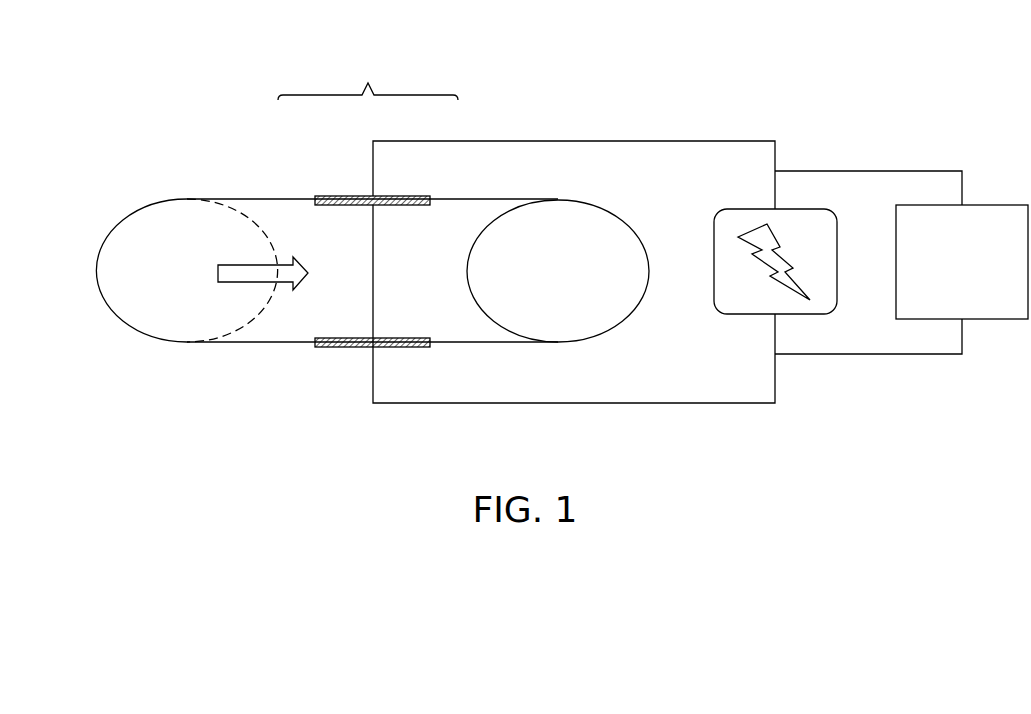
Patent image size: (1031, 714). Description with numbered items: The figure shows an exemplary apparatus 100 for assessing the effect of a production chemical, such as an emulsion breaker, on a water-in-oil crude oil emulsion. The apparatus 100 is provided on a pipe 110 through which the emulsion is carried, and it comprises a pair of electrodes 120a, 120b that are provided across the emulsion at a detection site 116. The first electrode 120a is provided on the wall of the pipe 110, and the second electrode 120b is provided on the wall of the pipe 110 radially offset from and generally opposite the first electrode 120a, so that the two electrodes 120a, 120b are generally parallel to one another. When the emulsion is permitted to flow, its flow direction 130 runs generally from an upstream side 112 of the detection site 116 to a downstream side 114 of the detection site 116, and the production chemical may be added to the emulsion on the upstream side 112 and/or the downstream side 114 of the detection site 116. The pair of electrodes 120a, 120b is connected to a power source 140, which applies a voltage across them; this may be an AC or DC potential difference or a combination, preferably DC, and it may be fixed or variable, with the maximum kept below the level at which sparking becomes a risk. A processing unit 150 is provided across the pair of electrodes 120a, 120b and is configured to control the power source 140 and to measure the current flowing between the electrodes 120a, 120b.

The apparatus 100 is at (802, 88).
The pipe 110 is at (248, 198).
The upstream side 112 is at (114, 270).
The downstream side 114 is at (583, 271).
The detection site 116 is at (368, 76).
The first electrode 120a is at (325, 350).
The second electrode 120b is at (338, 193).
The flow direction 130 is at (225, 280).
The power source 140 is at (805, 318).
The processing unit 150 is at (993, 322).